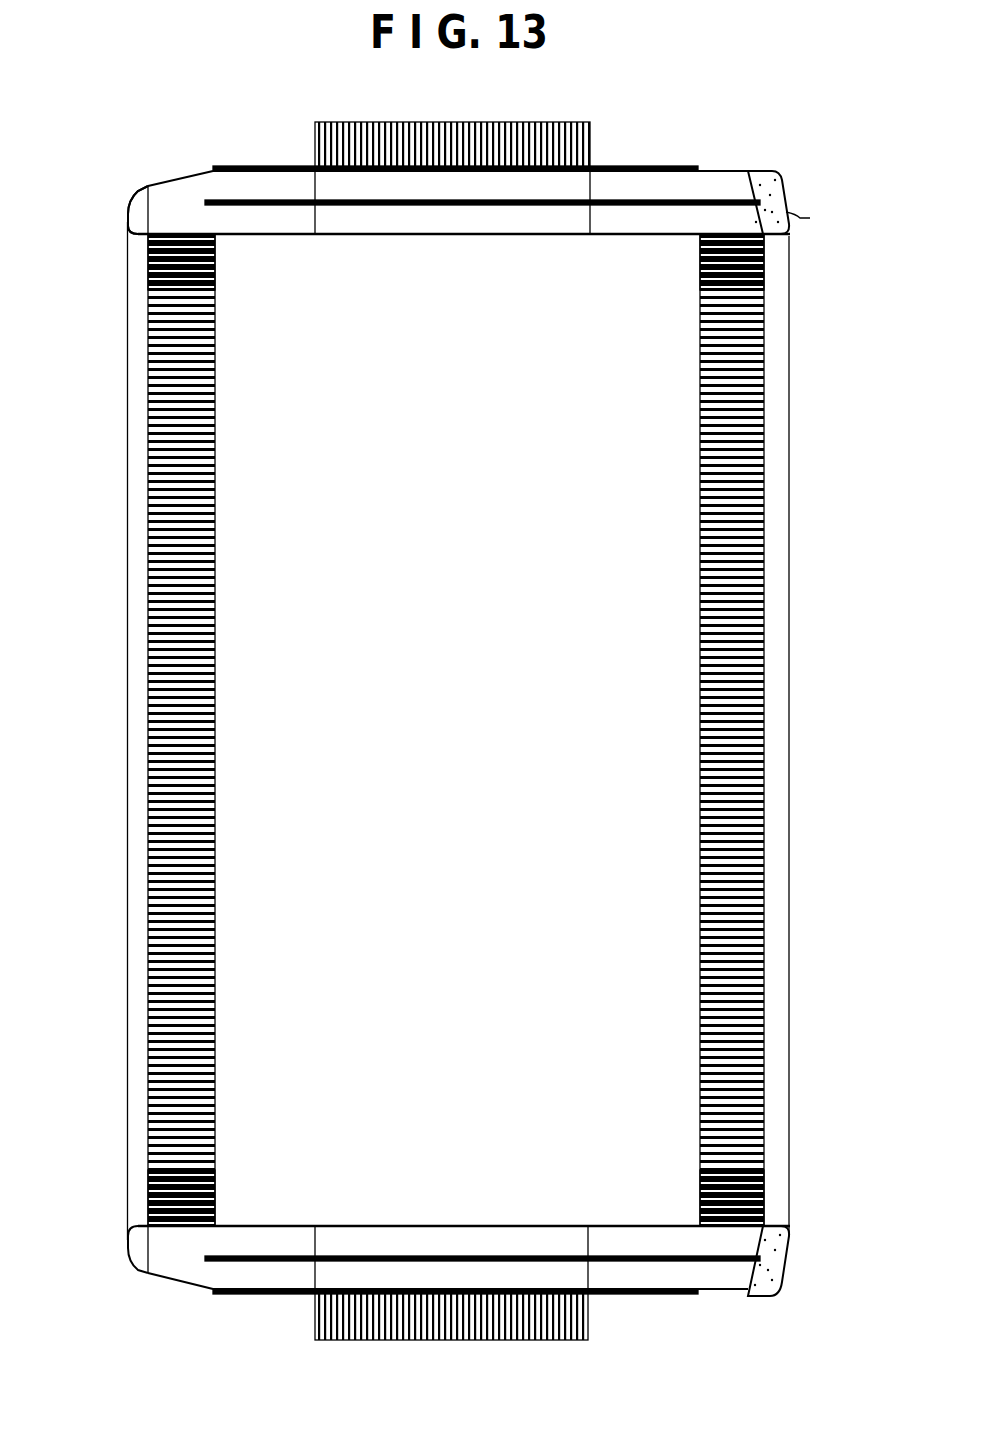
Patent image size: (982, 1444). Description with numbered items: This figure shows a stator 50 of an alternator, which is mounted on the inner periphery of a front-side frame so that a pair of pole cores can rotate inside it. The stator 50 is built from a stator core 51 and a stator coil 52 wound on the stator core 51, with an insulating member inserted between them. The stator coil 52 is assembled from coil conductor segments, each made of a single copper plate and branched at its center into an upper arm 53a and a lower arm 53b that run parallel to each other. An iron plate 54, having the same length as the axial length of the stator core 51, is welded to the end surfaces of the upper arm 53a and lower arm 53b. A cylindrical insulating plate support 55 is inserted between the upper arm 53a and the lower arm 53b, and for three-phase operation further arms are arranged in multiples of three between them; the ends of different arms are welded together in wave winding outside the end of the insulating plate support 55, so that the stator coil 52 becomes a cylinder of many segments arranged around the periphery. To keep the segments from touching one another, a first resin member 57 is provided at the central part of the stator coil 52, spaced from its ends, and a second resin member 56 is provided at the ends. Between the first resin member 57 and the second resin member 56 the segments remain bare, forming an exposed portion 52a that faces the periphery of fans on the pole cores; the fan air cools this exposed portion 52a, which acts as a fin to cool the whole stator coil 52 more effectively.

The stator 50 is at (686, 160).
The stator core 51 is at (498, 140).
The stator coil 52 is at (712, 190).
The exposed portion 52a is at (158, 500).
The upper arm 53a is at (609, 185).
The lower arm 53b is at (634, 228).
The iron plate 54 is at (432, 183).
The insulating plate support 55 is at (290, 200).
The second resin member 56 is at (133, 212).
The first resin member 57 is at (222, 166).